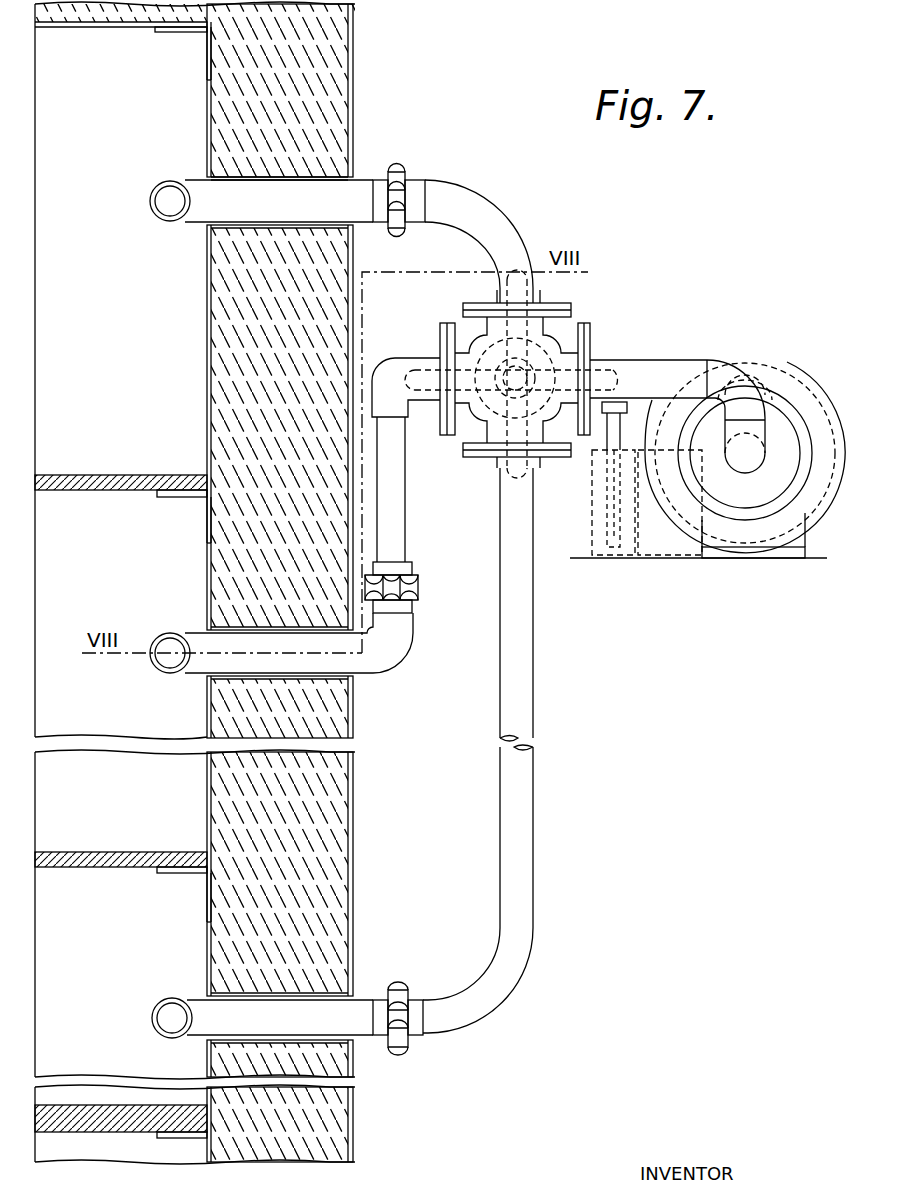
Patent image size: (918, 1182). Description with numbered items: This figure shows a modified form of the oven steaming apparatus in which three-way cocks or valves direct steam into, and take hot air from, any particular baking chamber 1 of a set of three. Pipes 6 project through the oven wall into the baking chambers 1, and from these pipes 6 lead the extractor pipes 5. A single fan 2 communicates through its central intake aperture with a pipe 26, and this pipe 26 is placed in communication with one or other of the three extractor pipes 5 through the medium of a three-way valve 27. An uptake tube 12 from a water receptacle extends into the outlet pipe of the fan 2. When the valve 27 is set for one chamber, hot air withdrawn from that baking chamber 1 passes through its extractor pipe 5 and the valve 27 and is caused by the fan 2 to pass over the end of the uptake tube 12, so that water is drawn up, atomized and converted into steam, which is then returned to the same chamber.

The baking chamber 1 is at (180, 125).
The fan 2 is at (815, 490).
The extractor pipe 5 is at (484, 207).
The pipe 6 is at (312, 192).
The uptake tube 12 is at (612, 428).
The pipe 26 is at (752, 412).
The three-way valve 27 is at (537, 347).